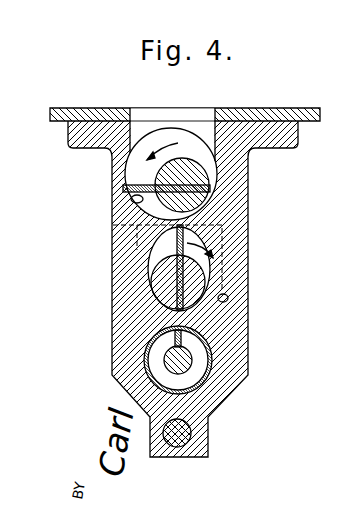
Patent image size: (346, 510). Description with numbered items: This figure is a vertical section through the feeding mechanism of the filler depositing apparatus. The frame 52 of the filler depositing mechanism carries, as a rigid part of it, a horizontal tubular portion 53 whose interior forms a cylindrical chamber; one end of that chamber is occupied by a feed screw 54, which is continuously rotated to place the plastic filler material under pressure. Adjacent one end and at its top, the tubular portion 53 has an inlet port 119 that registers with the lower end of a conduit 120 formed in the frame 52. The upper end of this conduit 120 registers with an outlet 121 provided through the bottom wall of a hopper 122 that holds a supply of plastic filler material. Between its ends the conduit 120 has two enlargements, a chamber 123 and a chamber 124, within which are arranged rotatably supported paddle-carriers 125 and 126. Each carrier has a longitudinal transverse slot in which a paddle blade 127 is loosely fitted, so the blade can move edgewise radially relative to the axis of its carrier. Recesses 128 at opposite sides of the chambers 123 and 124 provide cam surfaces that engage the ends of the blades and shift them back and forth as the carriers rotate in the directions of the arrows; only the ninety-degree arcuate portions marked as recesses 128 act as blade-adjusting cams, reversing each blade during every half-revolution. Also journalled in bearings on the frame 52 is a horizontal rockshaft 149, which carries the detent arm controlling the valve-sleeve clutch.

The frame 52 is at (255, 205).
The horizontal tubular portion 53 is at (213, 381).
The feed screw 54 is at (200, 361).
The inlet port 119 is at (248, 320).
The conduit 120 is at (138, 130).
The outlet 121 is at (210, 101).
The hopper 122 is at (68, 107).
The chamber 123 is at (132, 167).
The chamber 124 is at (235, 268).
The paddle-carrier 125 is at (253, 165).
The paddle-carrier 126 is at (222, 243).
The paddle blade 127 is at (124, 187).
The recesses 128 is at (131, 200).
The rockshaft 149 is at (207, 429).